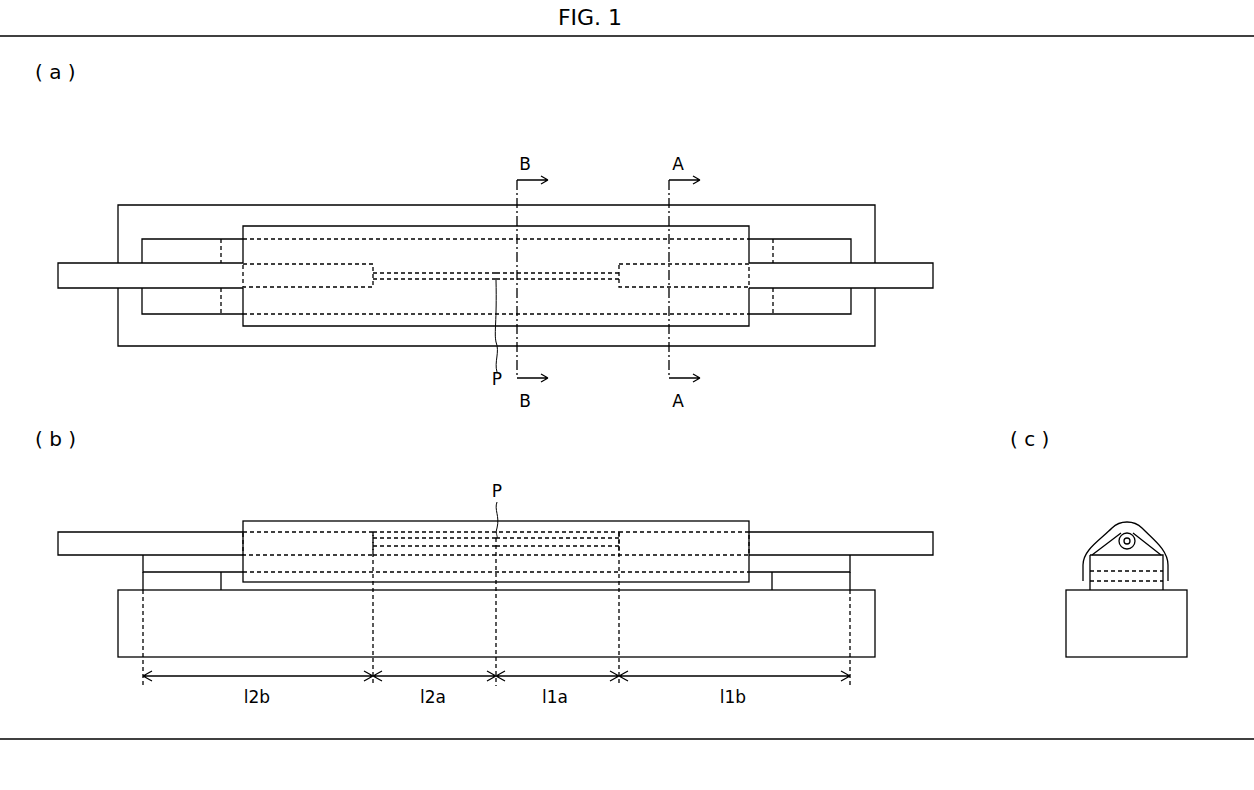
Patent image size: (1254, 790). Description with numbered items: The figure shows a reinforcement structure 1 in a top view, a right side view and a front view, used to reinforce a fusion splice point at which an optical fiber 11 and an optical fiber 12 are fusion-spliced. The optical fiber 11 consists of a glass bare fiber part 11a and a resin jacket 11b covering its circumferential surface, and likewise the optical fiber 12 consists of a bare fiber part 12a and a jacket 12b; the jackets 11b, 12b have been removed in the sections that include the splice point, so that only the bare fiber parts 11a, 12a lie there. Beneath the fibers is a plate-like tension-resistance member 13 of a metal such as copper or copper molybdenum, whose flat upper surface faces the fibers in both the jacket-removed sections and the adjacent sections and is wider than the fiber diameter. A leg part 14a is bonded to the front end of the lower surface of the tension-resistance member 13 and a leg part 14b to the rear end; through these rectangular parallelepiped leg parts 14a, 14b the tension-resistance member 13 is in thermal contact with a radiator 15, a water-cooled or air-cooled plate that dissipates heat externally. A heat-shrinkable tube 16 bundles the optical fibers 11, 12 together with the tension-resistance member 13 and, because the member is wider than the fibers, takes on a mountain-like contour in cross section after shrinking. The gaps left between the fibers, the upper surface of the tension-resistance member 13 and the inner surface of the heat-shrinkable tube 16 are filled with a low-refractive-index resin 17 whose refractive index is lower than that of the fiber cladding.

The reinforcement structure 1 is at (1210, 486).
The optical fiber 11 is at (1170, 494).
The bare fiber part 11a is at (1118, 534).
The jacket 11b is at (1140, 533).
The optical fiber 12 is at (425, 477).
The bare fiber part 12a is at (407, 538).
The jacket 12b is at (360, 532).
The tension-resistance member 13 is at (1163, 558).
The leg part 14a is at (1163, 583).
The leg part 14b is at (143, 583).
The radiator 15 is at (1187, 606).
The heat-shrinkable tube 16 is at (1083, 567).
The low-refractive-index resin 17 is at (1090, 550).